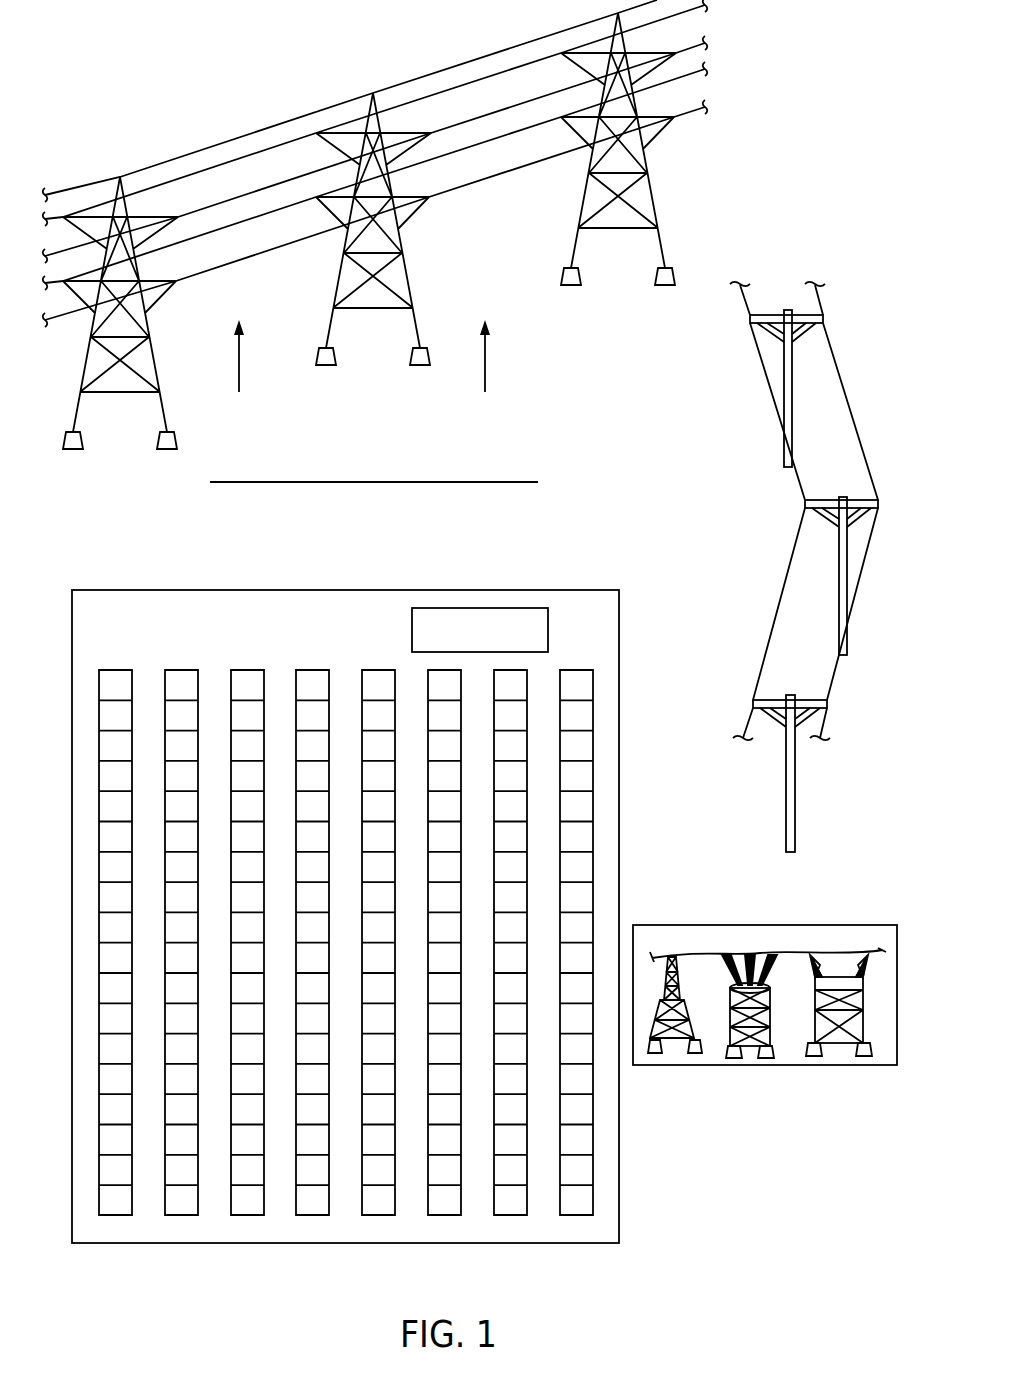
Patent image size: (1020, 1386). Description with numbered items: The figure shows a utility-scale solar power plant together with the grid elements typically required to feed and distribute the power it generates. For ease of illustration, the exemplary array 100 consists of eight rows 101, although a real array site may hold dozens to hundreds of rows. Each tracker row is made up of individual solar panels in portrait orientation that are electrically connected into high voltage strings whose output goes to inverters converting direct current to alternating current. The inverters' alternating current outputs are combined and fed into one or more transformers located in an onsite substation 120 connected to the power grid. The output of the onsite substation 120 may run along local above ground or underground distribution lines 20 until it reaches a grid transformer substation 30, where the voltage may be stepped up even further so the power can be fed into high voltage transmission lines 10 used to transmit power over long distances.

The high voltage transmission lines 10 is at (198, 100).
The distribution lines 20 is at (856, 362).
The grid transformer substation 30 is at (824, 907).
The array 100 is at (165, 565).
The rows 101 is at (113, 1216).
The onsite substation 120 is at (480, 608).